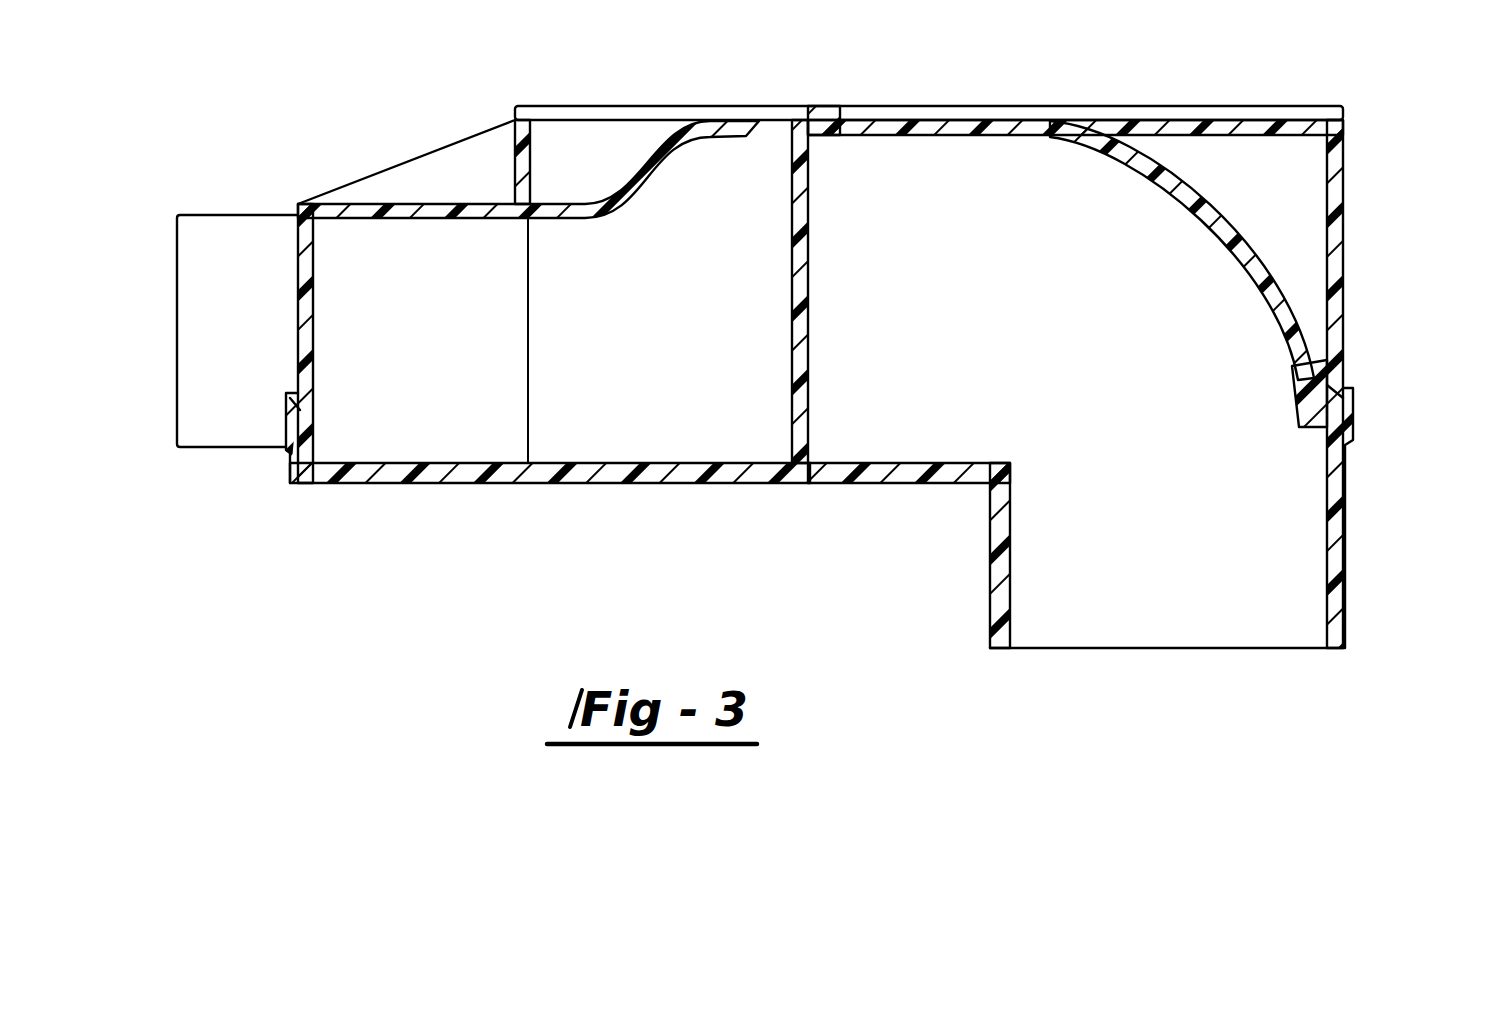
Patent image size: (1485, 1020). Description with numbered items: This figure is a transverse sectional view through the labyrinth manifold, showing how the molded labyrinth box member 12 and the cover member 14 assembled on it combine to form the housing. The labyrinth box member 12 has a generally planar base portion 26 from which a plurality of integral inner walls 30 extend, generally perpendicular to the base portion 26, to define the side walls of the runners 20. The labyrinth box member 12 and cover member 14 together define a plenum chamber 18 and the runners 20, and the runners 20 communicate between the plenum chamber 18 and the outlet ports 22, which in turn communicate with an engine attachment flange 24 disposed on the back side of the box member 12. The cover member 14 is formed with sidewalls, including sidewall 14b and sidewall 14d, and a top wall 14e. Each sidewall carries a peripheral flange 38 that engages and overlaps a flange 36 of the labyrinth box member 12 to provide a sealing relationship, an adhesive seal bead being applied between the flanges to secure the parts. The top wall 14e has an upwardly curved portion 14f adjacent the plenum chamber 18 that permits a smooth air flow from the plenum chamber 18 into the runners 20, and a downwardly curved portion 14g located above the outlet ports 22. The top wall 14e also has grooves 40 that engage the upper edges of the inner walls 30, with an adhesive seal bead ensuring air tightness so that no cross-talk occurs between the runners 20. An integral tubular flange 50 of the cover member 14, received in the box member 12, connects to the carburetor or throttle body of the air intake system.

The labyrinth box member 12 is at (850, 470).
The cover member 14 is at (920, 130).
The sidewall 14b is at (1345, 212).
The sidewall 14d is at (303, 272).
The top wall 14e is at (1020, 132).
The upwardly curved portion 14f is at (622, 178).
The downwardly curved portion 14g is at (1185, 185).
The plenum chamber 18 is at (395, 428).
The runners 20 is at (748, 433).
The outlet ports 22 is at (1227, 587).
The engine attachment flange 24 is at (1000, 593).
The base portion 26 is at (590, 470).
The inner walls 30 is at (688, 268).
The flange 36 is at (290, 441).
The peripheral flange 38 is at (297, 410).
The grooves 40 is at (783, 133).
The tubular flange 50 is at (218, 214).